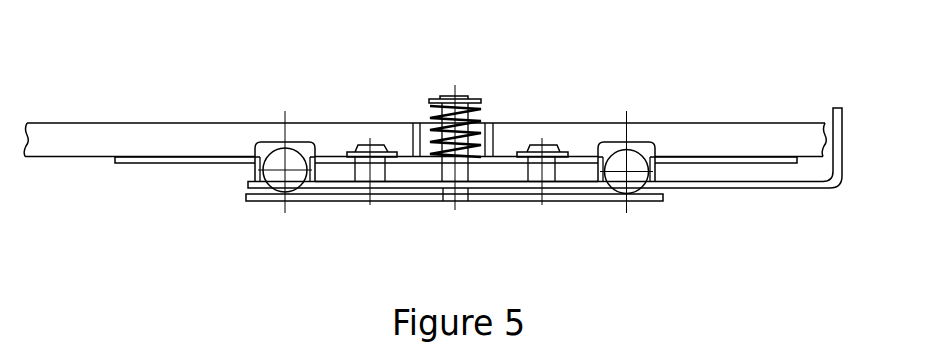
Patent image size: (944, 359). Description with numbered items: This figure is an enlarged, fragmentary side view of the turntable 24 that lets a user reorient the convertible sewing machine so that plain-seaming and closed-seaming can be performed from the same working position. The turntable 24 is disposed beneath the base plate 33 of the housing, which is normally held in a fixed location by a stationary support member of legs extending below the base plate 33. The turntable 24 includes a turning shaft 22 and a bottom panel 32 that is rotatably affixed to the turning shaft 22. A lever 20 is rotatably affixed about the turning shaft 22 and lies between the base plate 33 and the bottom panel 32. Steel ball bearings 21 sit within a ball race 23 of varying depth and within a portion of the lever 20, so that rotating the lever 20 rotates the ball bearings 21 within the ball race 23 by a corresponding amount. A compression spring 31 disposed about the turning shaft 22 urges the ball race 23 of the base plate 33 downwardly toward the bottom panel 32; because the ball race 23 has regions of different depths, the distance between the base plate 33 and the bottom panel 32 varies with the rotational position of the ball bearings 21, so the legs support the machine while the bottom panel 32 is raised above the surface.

The lever 20 is at (840, 163).
The steel ball bearings 21 is at (633, 162).
The turning shaft 22 is at (465, 172).
The ball race 23 is at (307, 150).
The turntable 24 is at (133, 162).
The compression spring 31 is at (478, 98).
The bottom panel 32 is at (593, 198).
The base plate 33 is at (215, 138).